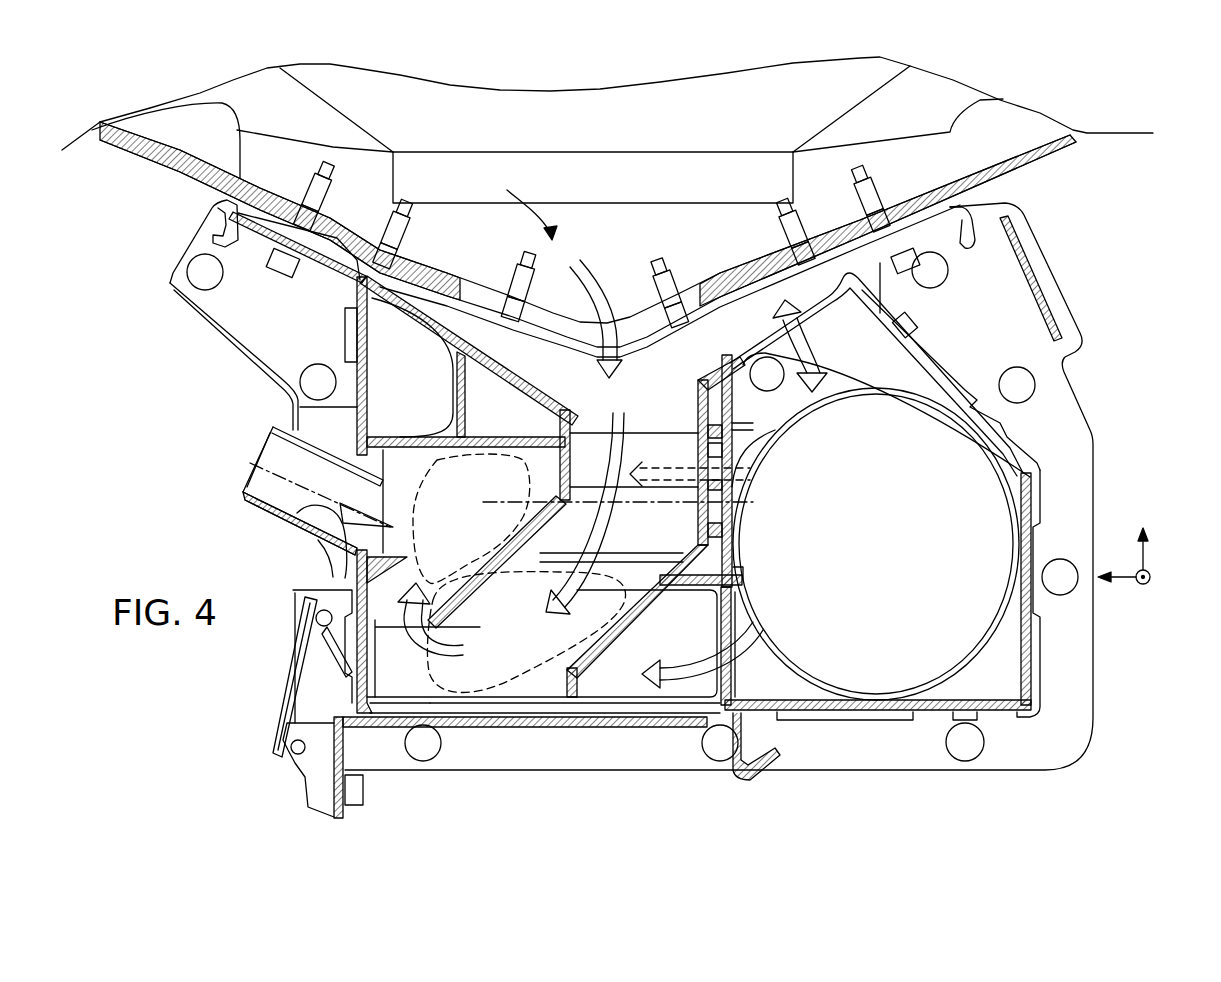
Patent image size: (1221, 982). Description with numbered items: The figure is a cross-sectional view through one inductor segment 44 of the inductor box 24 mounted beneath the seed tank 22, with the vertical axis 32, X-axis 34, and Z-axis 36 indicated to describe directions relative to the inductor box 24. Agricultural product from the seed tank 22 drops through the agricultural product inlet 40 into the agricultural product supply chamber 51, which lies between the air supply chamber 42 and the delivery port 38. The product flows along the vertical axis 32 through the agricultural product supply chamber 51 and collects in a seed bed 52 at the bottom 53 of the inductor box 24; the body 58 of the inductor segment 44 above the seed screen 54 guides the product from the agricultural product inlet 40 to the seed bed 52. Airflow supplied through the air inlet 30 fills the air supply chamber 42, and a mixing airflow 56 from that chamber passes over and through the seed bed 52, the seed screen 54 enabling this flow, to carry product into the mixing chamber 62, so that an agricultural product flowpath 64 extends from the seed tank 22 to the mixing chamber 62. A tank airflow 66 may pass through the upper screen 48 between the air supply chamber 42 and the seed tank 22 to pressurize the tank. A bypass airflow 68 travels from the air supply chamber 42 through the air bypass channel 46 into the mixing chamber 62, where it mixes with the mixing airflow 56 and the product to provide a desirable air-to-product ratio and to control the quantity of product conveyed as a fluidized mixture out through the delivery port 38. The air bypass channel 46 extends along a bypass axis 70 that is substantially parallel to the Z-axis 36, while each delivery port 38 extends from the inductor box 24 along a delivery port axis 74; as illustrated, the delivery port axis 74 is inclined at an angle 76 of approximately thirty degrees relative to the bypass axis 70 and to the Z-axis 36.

The seed tank 22 is at (150, 133).
The inductor box 24 is at (1077, 467).
The air inlet 30 is at (977, 652).
The vertical axis 32 is at (1148, 553).
The X-axis 34 is at (1147, 583).
The Z-axis 36 is at (1122, 578).
The delivery port 38 is at (243, 493).
The agricultural product inlet 40 is at (518, 206).
The air supply chamber 42 is at (808, 665).
The inductor segment 44 is at (713, 377).
The air bypass channel 46 is at (668, 453).
The upper screen 48 is at (805, 312).
The agricultural product supply chamber 51 is at (607, 418).
The seed bed 52 is at (490, 697).
The bottom 53 is at (572, 727).
The seed screen 54 is at (583, 687).
The mixing airflow 56 is at (681, 658).
The body 58 is at (647, 607).
The mixing chamber 62 is at (430, 467).
The agricultural product flowpath 64 is at (607, 290).
The tank airflow 66 is at (817, 362).
The bypass airflow 68 is at (680, 483).
The bypass axis 70 is at (737, 500).
The delivery port axis 74 is at (245, 460).
The angle 76 is at (320, 503).